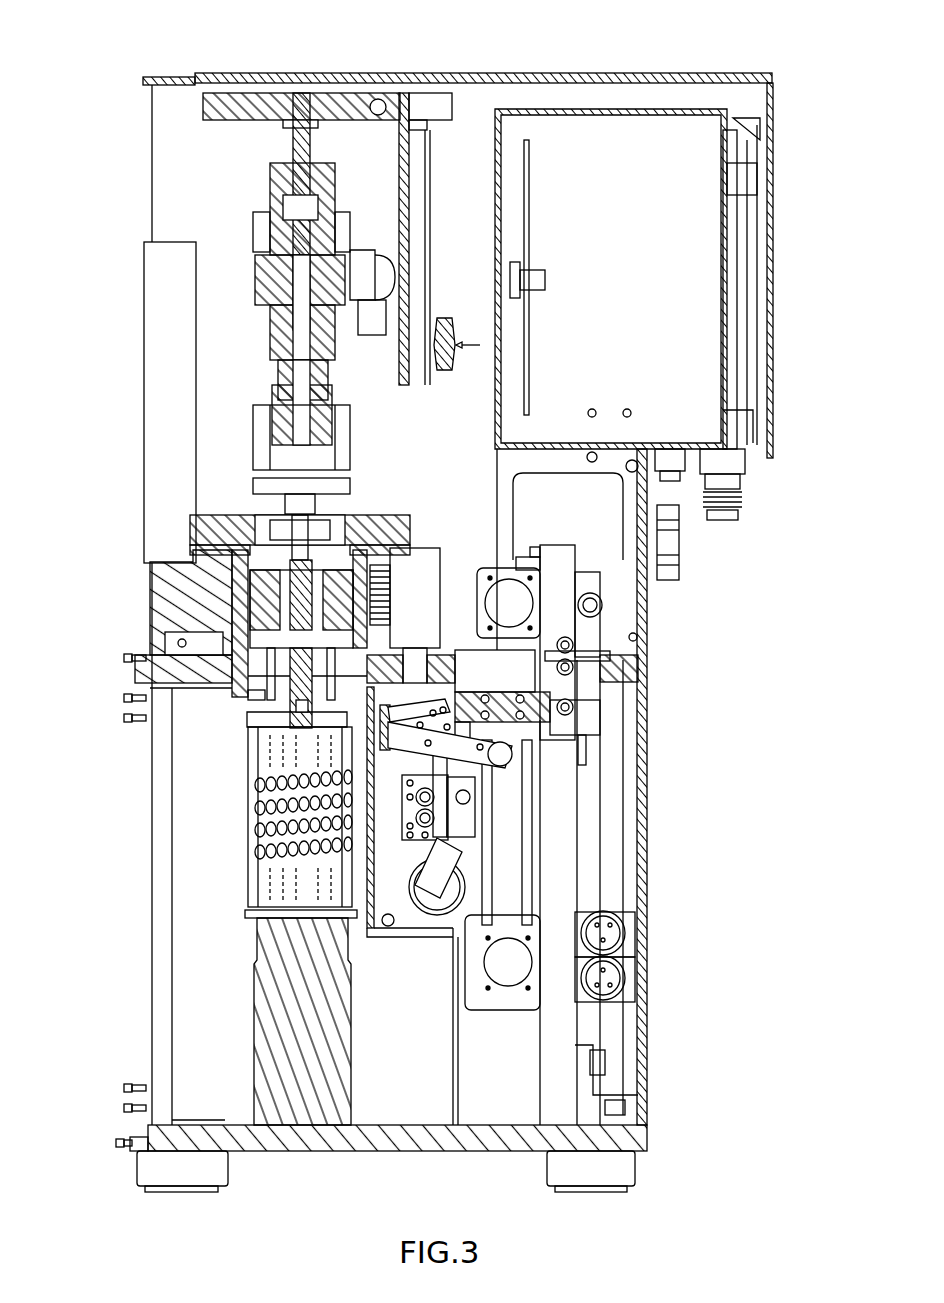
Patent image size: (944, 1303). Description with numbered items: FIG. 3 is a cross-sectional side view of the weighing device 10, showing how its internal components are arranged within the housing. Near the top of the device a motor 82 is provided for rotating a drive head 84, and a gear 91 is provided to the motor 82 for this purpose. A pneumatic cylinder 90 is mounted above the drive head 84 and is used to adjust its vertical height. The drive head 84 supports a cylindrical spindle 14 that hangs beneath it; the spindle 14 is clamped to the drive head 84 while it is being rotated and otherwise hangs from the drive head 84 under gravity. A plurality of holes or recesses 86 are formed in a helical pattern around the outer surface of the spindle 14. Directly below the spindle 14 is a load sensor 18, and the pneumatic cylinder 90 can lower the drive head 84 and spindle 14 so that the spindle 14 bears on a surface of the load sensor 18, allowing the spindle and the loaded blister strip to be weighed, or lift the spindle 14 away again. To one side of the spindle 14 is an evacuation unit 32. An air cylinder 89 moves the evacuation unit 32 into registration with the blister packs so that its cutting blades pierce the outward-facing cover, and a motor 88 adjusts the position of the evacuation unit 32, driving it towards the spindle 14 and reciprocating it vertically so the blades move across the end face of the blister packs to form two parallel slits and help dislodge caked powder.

The weighing device 10 is at (782, 59).
The pneumatic cylinder 90 is at (270, 184).
The motor 82 is at (255, 280).
The gear 91 is at (190, 527).
The drive head 84 is at (250, 694).
The cylindrical spindle 14 is at (280, 748).
The recesses 86 is at (252, 865).
The load sensor 18 is at (280, 985).
The motor 88 is at (557, 620).
The air cylinder 89 is at (545, 710).
The evacuation unit 32 is at (437, 728).